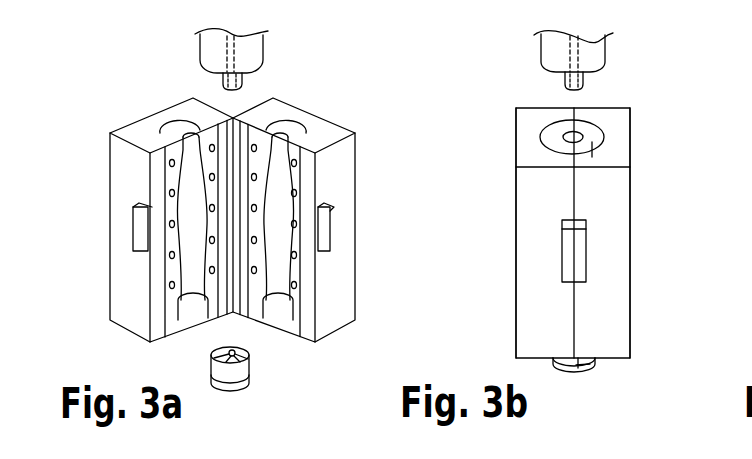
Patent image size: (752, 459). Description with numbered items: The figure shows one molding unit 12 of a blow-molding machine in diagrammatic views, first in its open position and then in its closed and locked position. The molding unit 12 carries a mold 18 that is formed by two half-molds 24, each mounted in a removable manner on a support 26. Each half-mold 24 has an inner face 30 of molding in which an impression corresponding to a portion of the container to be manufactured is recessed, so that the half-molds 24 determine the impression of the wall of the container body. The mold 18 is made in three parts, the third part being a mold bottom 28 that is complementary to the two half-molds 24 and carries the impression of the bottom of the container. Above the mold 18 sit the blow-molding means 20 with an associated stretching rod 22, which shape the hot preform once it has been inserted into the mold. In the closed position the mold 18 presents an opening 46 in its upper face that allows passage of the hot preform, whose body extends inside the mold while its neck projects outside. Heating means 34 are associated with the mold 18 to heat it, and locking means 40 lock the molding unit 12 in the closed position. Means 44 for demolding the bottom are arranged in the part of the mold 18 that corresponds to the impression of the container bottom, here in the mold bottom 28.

In FIG. 3a, the molding unit 12 is at (318, 56).
In FIG. 3b, the molding unit 12 is at (668, 219).
In FIG. 3a, the mold 18 is at (324, 135).
In FIG. 3b, the mold 18 is at (635, 143).
In FIG. 3a, the blow-molding means 20 is at (213, 52).
In FIG. 3b, the blow-molding means 20 is at (590, 61).
In FIG. 3a, the stretching rod 22 is at (235, 61).
In FIG. 3b, the stretching rod 22 is at (566, 54).
In FIG. 3a, the half-mold 24 is at (170, 137).
In FIG. 3b, the half-mold 24 is at (553, 137).
In FIG. 3a, the support 26 is at (125, 197).
In FIG. 3b, the support 26 is at (540, 208).
In FIG. 3a, the mold bottom 28 is at (231, 369).
In FIG. 3b, the mold bottom 28 is at (580, 373).
In FIG. 3a, the inner face 30 is at (193, 211).
In FIG. 3a, the heating means 34 is at (169, 262).
In FIG. 3a, the locking means 40 is at (327, 227).
In FIG. 3b, the locking means 40 is at (580, 263).
In FIG. 3a, the means for demolding the bottom 44 is at (231, 352).
In FIG. 3a, the opening 46 is at (289, 136).
In FIG. 3b, the opening 46 is at (578, 125).